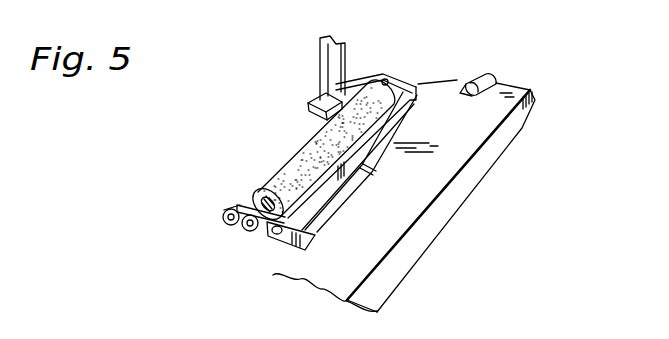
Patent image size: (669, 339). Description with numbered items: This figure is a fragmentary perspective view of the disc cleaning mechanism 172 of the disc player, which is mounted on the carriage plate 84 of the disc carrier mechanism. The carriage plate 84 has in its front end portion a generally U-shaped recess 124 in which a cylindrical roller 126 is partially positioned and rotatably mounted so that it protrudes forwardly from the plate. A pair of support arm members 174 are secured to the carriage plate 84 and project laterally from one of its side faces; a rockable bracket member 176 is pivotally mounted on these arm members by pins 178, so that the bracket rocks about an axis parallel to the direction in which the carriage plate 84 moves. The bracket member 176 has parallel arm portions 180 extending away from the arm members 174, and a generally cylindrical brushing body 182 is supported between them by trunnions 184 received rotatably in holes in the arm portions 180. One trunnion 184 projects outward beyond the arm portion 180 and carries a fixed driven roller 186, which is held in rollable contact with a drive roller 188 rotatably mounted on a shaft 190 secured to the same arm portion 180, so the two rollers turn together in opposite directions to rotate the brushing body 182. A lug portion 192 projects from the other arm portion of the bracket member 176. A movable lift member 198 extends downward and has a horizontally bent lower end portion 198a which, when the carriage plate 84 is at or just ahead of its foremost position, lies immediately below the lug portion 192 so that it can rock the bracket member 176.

The carriage plate 84 is at (493, 166).
The U-shaped recess 124 is at (493, 77).
The cylindrical roller 126 is at (483, 74).
The disc cleaning mechanism 172 is at (276, 106).
The support arm member 174 is at (432, 80).
The rockable bracket member 176 is at (366, 168).
The pin 178 is at (270, 237).
The arm portion 180 is at (404, 76).
The brushing body 182 is at (296, 152).
The trunnion 184 is at (384, 78).
The driven roller 186 is at (247, 233).
The drive roller 188 is at (222, 216).
The shaft 190 is at (223, 208).
The lug portion 192 is at (330, 80).
The lift member 198 is at (348, 48).
The horizontally bent lower end portion 198a is at (310, 102).